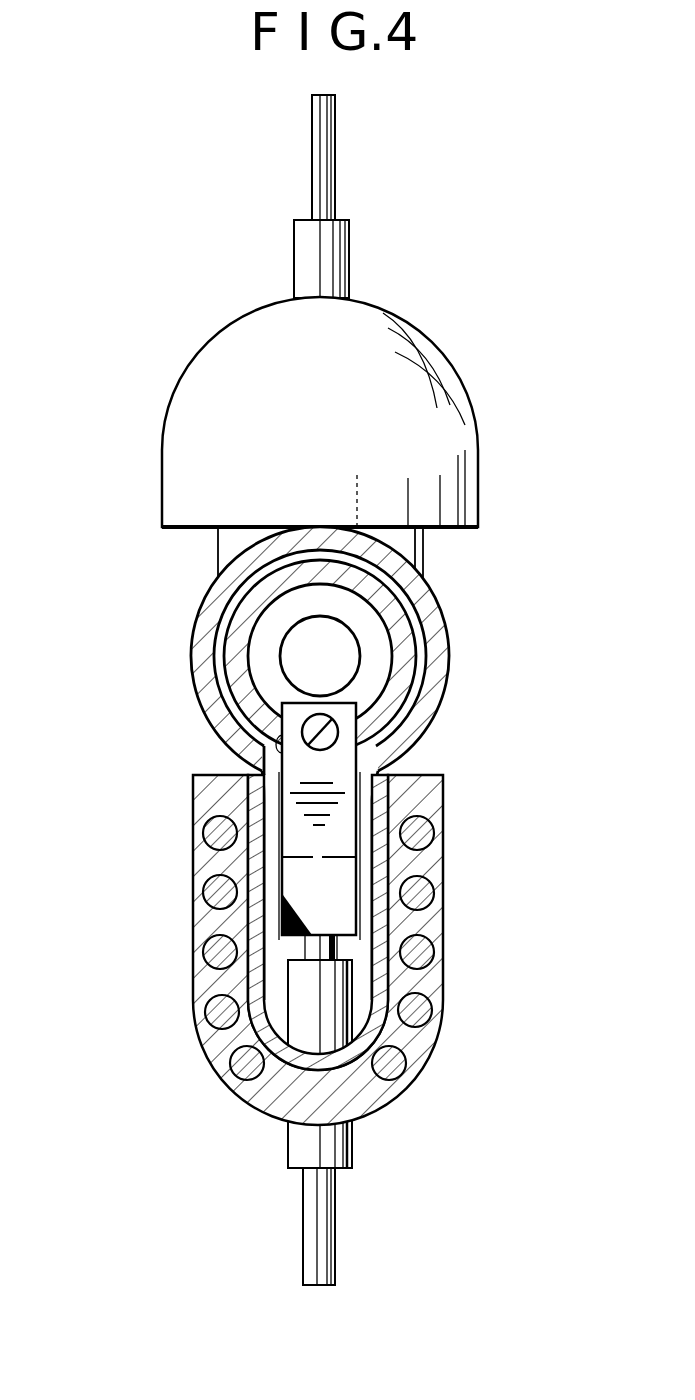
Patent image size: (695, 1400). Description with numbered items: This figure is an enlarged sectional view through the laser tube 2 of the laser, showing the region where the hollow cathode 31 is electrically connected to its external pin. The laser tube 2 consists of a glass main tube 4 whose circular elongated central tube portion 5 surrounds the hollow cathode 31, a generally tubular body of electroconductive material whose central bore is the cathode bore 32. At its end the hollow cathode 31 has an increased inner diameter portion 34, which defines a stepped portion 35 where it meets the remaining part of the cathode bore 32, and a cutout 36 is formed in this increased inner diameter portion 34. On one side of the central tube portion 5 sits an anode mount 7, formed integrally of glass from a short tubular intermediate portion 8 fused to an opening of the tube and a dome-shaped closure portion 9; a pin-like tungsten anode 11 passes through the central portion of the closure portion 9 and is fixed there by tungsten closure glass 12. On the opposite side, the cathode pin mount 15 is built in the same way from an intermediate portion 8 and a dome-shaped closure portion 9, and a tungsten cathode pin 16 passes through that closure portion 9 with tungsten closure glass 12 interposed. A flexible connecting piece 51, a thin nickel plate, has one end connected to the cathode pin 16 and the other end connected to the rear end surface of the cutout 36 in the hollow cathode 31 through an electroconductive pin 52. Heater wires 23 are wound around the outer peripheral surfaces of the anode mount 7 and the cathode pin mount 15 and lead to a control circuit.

The anode 11 is at (327, 123).
The tungsten closure glass 12 is at (343, 250).
The anode mount 7 is at (453, 368).
The hollow cathode 31 is at (410, 597).
The glass main tube 4 is at (450, 628).
The central tube portion 5 is at (450, 647).
The laser tube 2 is at (450, 675).
The stepped portion 35 is at (373, 683).
The increased inner diameter portion 34 is at (277, 605).
The cathode bore 32 is at (298, 642).
The electroconductive pin 52 is at (303, 713).
The cutout 36 is at (283, 750).
The flexible connecting piece 51 is at (343, 815).
The intermediate portion 8 is at (447, 837).
The closure portion 9 is at (443, 983).
The cathode pin mount 15 is at (410, 950).
The heater wire 23 is at (203, 892).
The cathode pin 16 is at (322, 1235).